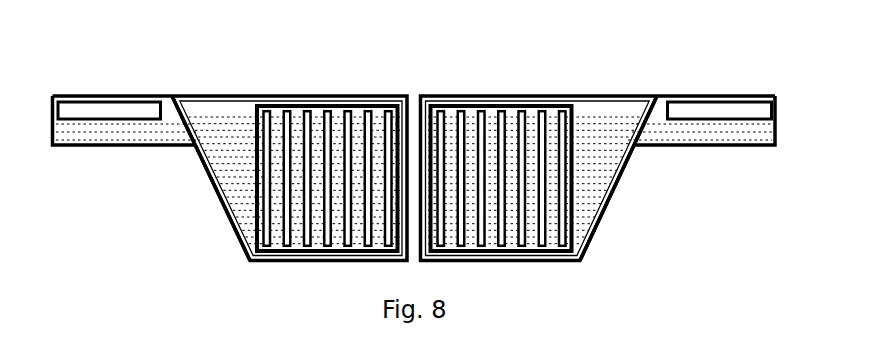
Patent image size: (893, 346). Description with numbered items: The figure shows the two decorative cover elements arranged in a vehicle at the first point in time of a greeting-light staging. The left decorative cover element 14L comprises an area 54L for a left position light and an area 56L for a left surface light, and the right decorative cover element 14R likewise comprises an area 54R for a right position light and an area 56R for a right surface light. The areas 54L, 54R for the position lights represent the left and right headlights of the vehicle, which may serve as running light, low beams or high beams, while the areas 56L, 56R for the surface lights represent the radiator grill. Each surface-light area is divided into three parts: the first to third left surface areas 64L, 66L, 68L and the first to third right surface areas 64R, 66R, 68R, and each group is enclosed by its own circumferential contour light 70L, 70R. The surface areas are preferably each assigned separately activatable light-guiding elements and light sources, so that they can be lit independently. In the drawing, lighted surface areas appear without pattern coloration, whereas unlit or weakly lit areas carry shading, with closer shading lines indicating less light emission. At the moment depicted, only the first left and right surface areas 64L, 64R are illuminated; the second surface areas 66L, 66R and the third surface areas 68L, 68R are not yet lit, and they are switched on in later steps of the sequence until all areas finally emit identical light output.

The right decorative cover element 14R is at (254, 87).
The left decorative cover element 14L is at (602, 84).
The area for right position light 54R is at (103, 108).
The area for left position light 54L is at (720, 112).
The area for right surface light 56R is at (195, 198).
The area for left surface light 56L is at (650, 198).
The right circumferential contour light 70R is at (196, 99).
The left circumferential contour light 70L is at (485, 102).
The first right surface area 64R is at (397, 265).
The first left surface area 64L is at (467, 265).
The second right surface area 66R is at (352, 265).
The second left surface area 66L is at (506, 265).
The third right surface area 68R is at (310, 265).
The third left surface area 68L is at (565, 265).